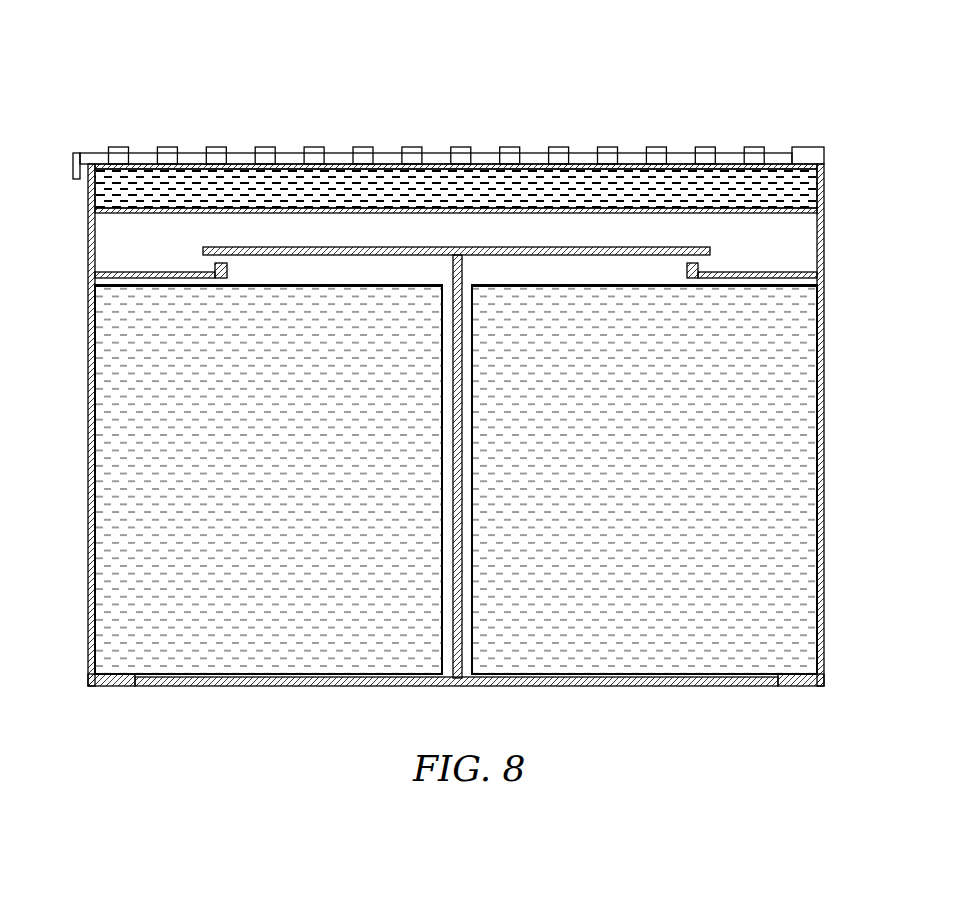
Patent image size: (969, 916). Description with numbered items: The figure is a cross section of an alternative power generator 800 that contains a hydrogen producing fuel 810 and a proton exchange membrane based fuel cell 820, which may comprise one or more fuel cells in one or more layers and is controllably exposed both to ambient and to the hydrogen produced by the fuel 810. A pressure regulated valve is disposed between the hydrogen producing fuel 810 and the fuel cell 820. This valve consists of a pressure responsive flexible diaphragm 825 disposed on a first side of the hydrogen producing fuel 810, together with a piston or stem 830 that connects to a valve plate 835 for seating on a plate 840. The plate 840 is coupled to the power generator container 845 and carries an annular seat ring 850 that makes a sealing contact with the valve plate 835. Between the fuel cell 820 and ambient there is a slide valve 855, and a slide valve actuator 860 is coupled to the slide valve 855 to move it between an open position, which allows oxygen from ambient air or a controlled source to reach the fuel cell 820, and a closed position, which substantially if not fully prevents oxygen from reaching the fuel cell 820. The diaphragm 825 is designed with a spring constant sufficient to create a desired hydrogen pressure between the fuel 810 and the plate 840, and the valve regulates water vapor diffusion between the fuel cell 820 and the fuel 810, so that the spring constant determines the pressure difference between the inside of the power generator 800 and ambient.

The power generator 800 is at (756, 53).
The hydrogen producing fuel 810 is at (235, 655).
The proton exchange membrane based fuel cell 820 is at (815, 192).
The pressure responsive flexible diaphragm 825 is at (593, 686).
The piston or stem 830 is at (462, 268).
The valve plate 835 is at (573, 246).
The plate 840 is at (757, 271).
The power generator container 845 is at (90, 240).
The annular seat ring 850 is at (228, 270).
The slide valve 855 is at (462, 147).
The slide valve actuator 860 is at (93, 152).